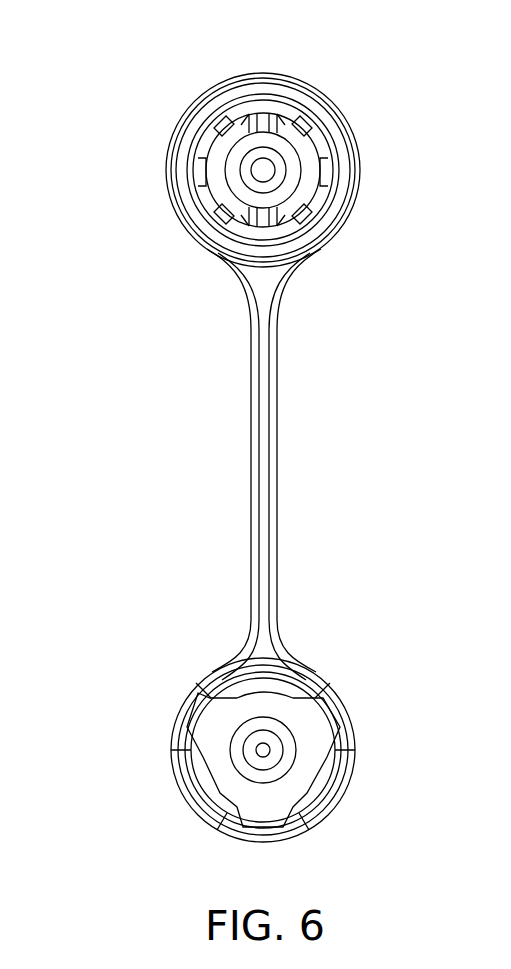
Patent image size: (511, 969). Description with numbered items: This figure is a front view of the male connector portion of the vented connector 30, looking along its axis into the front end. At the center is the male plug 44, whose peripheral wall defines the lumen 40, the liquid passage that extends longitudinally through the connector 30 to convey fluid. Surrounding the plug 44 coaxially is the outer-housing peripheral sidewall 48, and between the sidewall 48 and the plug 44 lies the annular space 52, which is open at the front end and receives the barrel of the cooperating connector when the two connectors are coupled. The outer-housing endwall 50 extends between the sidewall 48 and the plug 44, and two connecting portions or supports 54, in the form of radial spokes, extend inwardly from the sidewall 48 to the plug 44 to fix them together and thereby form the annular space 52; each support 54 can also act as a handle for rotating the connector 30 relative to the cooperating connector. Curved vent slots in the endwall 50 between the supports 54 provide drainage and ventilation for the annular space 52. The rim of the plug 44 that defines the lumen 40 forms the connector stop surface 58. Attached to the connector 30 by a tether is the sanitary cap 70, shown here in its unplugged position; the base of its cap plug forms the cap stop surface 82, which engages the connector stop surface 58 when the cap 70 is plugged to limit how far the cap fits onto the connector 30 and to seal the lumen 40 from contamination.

The vented connector 30 is at (362, 340).
The lumen 40 is at (358, 130).
The male plug 44 is at (198, 173).
The peripheral sidewall 48 is at (360, 167).
The endwall 50 is at (228, 186).
The annular space 52 is at (230, 138).
The connecting portion or support 54 is at (262, 118).
The connector stop surface 58 is at (240, 205).
The sanitary cap 70 is at (340, 630).
The cap stop surface 82 is at (240, 755).